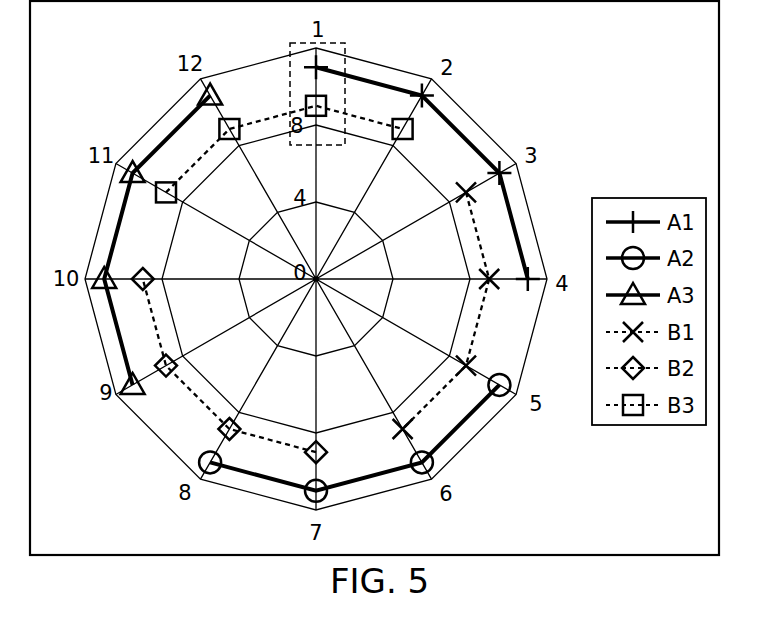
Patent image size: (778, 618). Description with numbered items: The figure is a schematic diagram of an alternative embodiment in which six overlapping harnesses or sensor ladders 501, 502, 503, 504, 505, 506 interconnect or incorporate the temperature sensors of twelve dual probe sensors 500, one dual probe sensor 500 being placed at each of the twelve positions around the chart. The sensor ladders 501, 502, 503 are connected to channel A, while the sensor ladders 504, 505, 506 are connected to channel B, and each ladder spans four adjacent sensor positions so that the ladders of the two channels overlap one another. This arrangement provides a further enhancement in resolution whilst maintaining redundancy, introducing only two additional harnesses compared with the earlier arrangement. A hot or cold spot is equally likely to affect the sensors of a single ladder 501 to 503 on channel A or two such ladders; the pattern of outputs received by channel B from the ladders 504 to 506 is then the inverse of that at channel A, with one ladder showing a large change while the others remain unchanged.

The dual probe sensor 500 is at (345, 43).
The sensor ladder 501 is at (467, 130).
The sensor ladder 502 is at (460, 435).
The sensor ladder 503 is at (171, 133).
The sensor ladder 504 is at (481, 221).
The sensor ladder 505 is at (198, 406).
The sensor ladder 506 is at (266, 116).